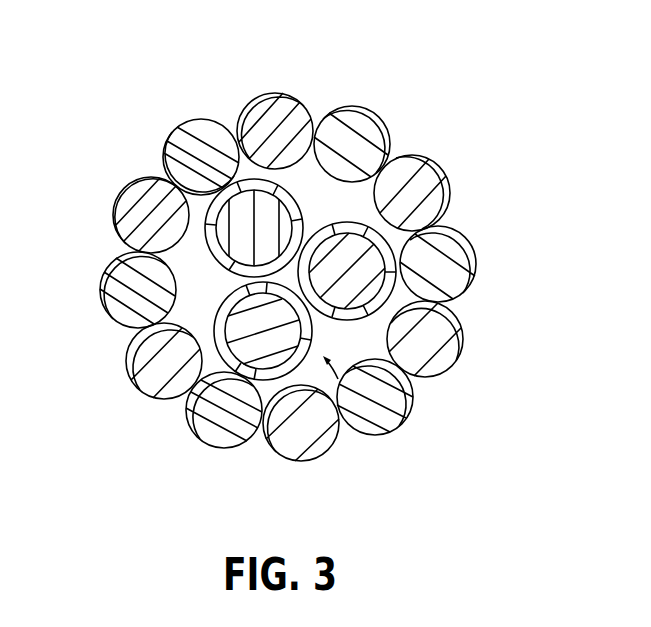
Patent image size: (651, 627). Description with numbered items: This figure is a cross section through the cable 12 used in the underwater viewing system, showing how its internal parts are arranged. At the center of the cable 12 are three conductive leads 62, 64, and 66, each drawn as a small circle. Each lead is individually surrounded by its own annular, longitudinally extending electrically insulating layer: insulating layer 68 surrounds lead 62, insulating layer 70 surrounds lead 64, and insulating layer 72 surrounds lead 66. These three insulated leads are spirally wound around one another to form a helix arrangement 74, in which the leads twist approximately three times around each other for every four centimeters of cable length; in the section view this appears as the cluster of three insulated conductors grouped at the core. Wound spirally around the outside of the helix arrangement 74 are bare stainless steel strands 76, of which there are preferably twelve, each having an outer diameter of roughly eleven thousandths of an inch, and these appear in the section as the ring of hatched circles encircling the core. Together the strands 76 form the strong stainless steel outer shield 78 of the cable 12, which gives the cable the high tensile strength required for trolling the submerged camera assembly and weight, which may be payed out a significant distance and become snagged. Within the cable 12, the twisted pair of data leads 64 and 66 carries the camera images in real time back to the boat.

The cable 12 is at (361, 90).
The conductive lead 62 is at (233, 203).
The conductive lead 64 is at (237, 347).
The conductive lead 66 is at (380, 276).
The electrically insulating layer 68 is at (205, 257).
The electrically insulating layer 70 is at (201, 331).
The electrically insulating layer 72 is at (432, 336).
The helix arrangement 74 is at (368, 408).
The bare stainless steel strands 76 is at (197, 127).
The stainless steel outer shield 78 is at (434, 155).